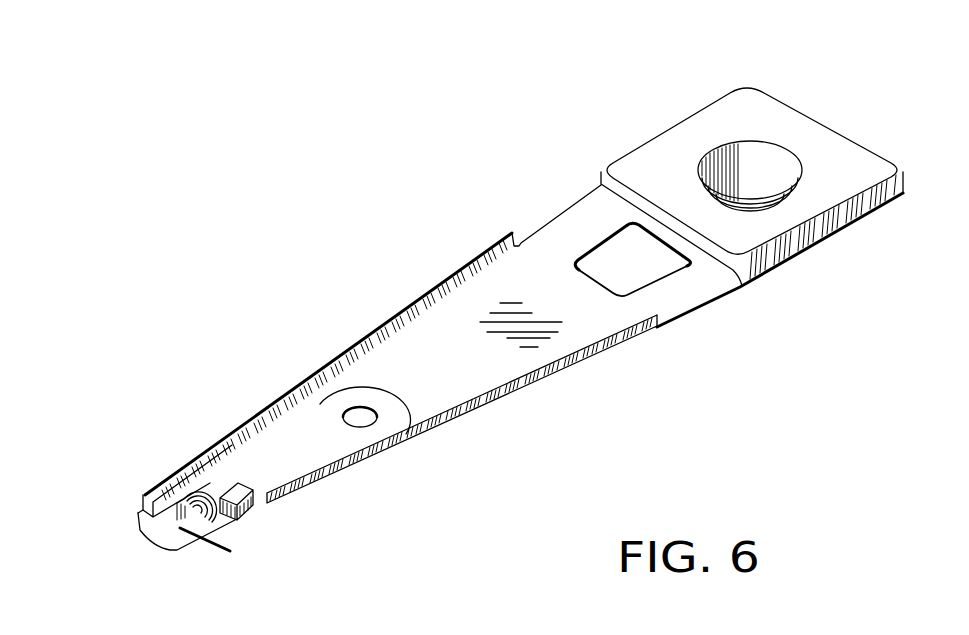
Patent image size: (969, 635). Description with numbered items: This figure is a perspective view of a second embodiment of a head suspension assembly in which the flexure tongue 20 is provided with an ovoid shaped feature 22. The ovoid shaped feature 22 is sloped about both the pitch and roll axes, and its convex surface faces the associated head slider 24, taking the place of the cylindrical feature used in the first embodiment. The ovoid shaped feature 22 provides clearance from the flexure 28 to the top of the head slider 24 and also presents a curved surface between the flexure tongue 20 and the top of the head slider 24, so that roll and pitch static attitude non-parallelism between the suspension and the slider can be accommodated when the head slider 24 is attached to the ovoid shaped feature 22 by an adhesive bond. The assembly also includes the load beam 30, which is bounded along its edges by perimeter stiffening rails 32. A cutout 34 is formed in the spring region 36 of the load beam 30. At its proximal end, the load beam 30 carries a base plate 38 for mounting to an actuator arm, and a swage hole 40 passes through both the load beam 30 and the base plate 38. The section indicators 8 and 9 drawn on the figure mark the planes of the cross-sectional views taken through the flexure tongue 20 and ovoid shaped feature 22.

The section line 8- 8 is at (92, 430).
The section line 9- 9 is at (35, 488).
The flexure tongue 20 is at (187, 527).
The ovoid shaped feature 22 is at (212, 525).
The head slider 24 is at (157, 490).
The flexure 28 is at (163, 533).
The load beam 30 is at (468, 305).
The perimeter stiffening rails 32 is at (328, 412).
The cutout 34 is at (631, 261).
The spring region 36 is at (550, 230).
The base plate 38 is at (837, 210).
The swage hole 40 is at (743, 140).